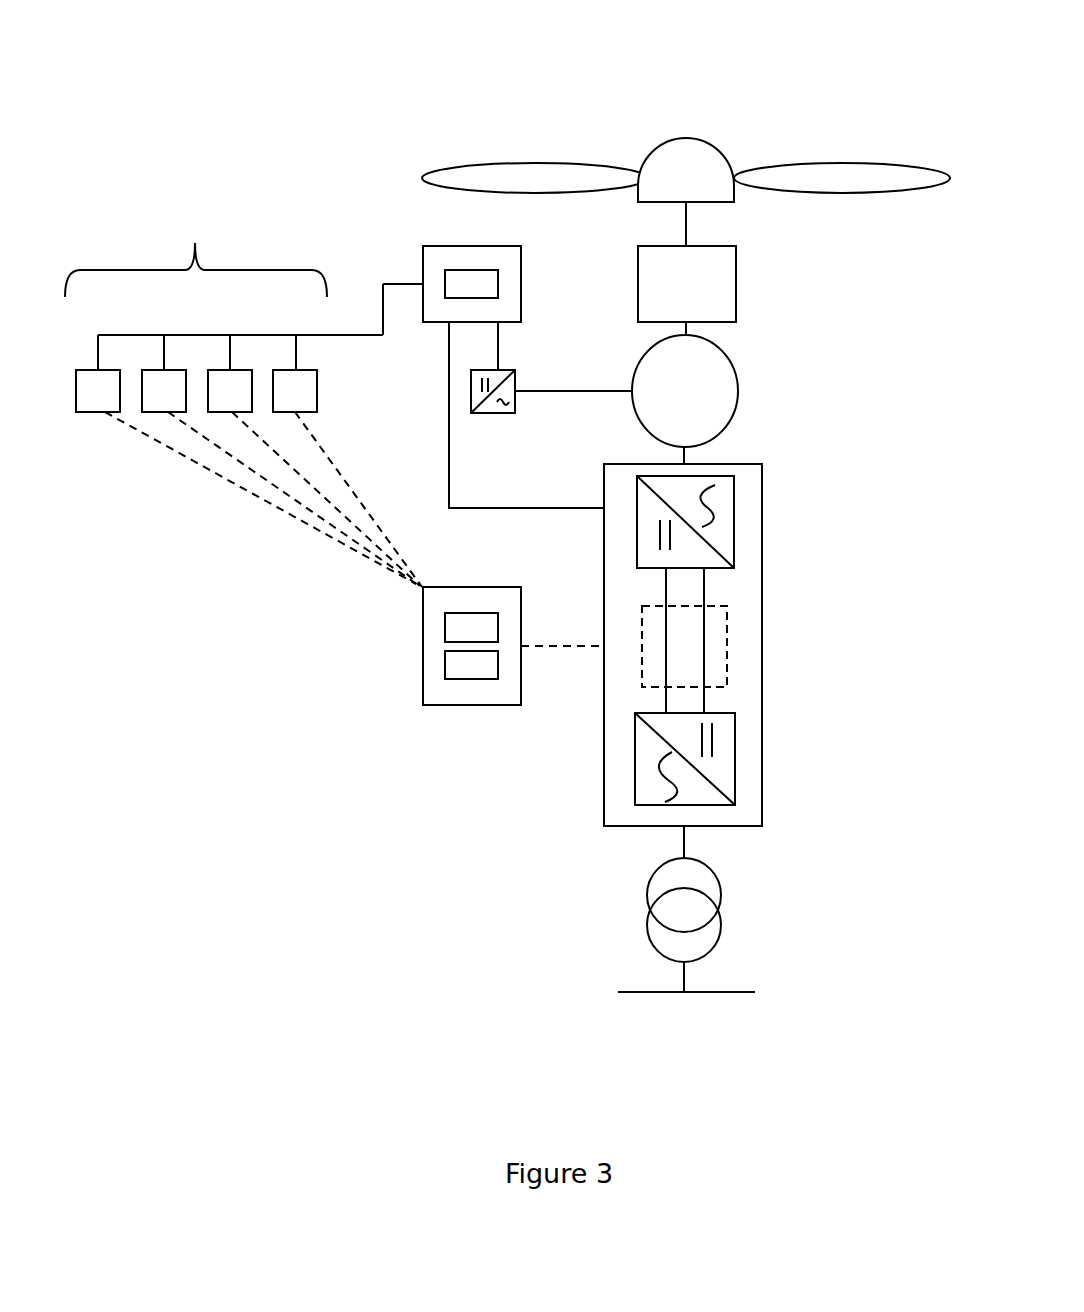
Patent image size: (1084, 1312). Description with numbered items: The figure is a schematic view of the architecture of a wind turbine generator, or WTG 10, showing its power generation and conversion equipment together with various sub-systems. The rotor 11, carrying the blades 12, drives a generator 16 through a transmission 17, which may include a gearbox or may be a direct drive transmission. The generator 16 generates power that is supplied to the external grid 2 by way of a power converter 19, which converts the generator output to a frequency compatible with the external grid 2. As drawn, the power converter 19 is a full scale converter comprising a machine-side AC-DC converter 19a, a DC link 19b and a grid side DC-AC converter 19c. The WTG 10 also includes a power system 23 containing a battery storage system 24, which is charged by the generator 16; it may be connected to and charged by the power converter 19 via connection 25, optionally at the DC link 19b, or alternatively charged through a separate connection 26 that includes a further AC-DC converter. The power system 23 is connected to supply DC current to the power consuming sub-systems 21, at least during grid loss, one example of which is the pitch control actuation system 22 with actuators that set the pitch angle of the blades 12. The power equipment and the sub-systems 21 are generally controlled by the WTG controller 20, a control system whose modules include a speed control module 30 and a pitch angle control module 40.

The wind turbine generator 10 is at (306, 76).
The rotor 11 is at (693, 148).
The blades 12 is at (883, 165).
The transmission 17 is at (736, 288).
The generator 16 is at (738, 388).
The power converter 19 is at (723, 631).
The machine-side AC-DC converter 19a is at (735, 540).
The DC link 19b is at (727, 630).
The grid side DC-AC converter 19c is at (735, 745).
The external grid 2 is at (735, 991).
The power consuming sub-systems 21 is at (231, 396).
The pitch control actuation system 22 is at (87, 413).
The power system 23 is at (487, 266).
The battery storage system 24 is at (460, 270).
The connection 25 is at (449, 480).
The connection 26 is at (582, 390).
The WTG controller 20 is at (469, 681).
The speed control module 30 is at (445, 627).
The pitch angle control module 40 is at (445, 666).